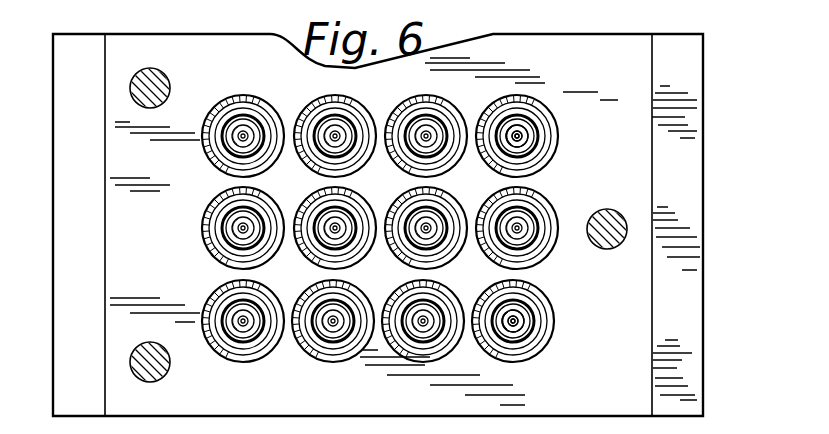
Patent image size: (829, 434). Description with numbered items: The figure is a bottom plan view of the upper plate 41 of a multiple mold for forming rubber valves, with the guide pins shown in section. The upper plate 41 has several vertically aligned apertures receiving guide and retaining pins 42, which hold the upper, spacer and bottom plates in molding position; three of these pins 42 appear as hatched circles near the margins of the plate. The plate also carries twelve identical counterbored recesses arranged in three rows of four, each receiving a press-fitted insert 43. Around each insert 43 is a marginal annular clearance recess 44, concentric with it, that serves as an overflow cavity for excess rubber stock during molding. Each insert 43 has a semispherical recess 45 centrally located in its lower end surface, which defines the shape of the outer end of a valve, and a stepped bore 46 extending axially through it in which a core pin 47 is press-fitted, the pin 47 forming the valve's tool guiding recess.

The upper plate 41 is at (683, 270).
The guide and retaining pins 42 is at (163, 373).
The insert 43 is at (250, 97).
The annular clearance recess 44 is at (388, 256).
The semispherical recess 45 is at (522, 126).
The stepped bore 46 is at (525, 320).
The pin 47 is at (240, 232).